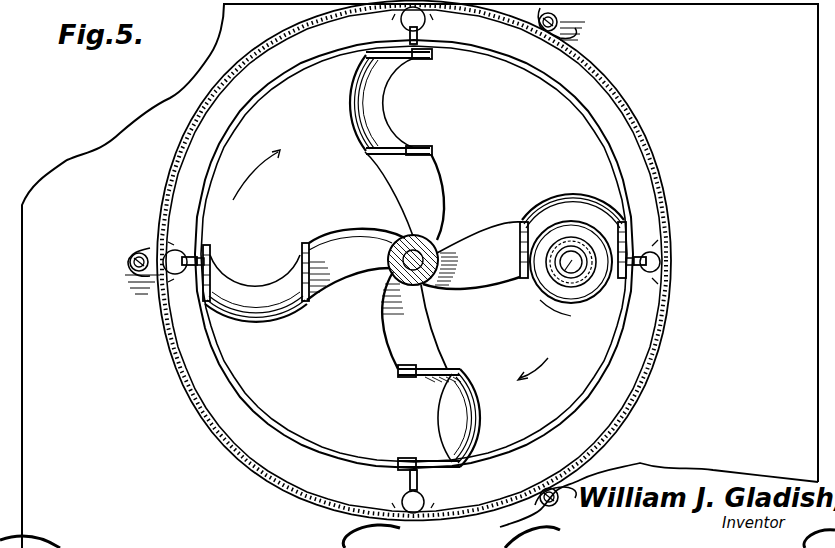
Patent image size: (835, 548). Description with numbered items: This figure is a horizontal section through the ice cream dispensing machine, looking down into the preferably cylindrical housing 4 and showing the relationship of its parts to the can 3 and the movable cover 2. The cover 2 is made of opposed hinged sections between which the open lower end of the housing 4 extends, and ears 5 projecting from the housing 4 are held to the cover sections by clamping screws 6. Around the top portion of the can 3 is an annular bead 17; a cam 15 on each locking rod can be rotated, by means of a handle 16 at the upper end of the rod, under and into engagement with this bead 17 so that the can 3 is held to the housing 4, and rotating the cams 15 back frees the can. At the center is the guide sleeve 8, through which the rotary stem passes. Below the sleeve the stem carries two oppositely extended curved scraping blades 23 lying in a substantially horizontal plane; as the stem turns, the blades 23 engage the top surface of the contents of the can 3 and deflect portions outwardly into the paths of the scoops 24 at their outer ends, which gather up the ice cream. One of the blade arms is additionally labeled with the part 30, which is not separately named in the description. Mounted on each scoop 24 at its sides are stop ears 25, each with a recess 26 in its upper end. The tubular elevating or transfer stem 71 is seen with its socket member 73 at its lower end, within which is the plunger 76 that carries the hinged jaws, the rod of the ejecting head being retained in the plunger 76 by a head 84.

The movable cover 2 is at (417, 276).
The can 3 is at (545, 78).
The housing 4 is at (185, 145).
The ears 5 is at (152, 248).
The clamping screws 6 is at (128, 262).
The guide sleeve 8 is at (393, 287).
The cam 15 is at (400, 22).
The handle 16 is at (432, 32).
The annular bead 17 is at (202, 343).
The scraping blades 23 is at (352, 238).
The scoop 24 is at (372, 113).
The stop ears 25 is at (430, 54).
The recess 26 is at (416, 58).
The arm 30 is at (420, 207).
The tubular elevating or transfer stem 71 is at (598, 232).
The socket member 73 is at (572, 302).
The plunger 76 is at (575, 240).
The head 84 is at (555, 290).